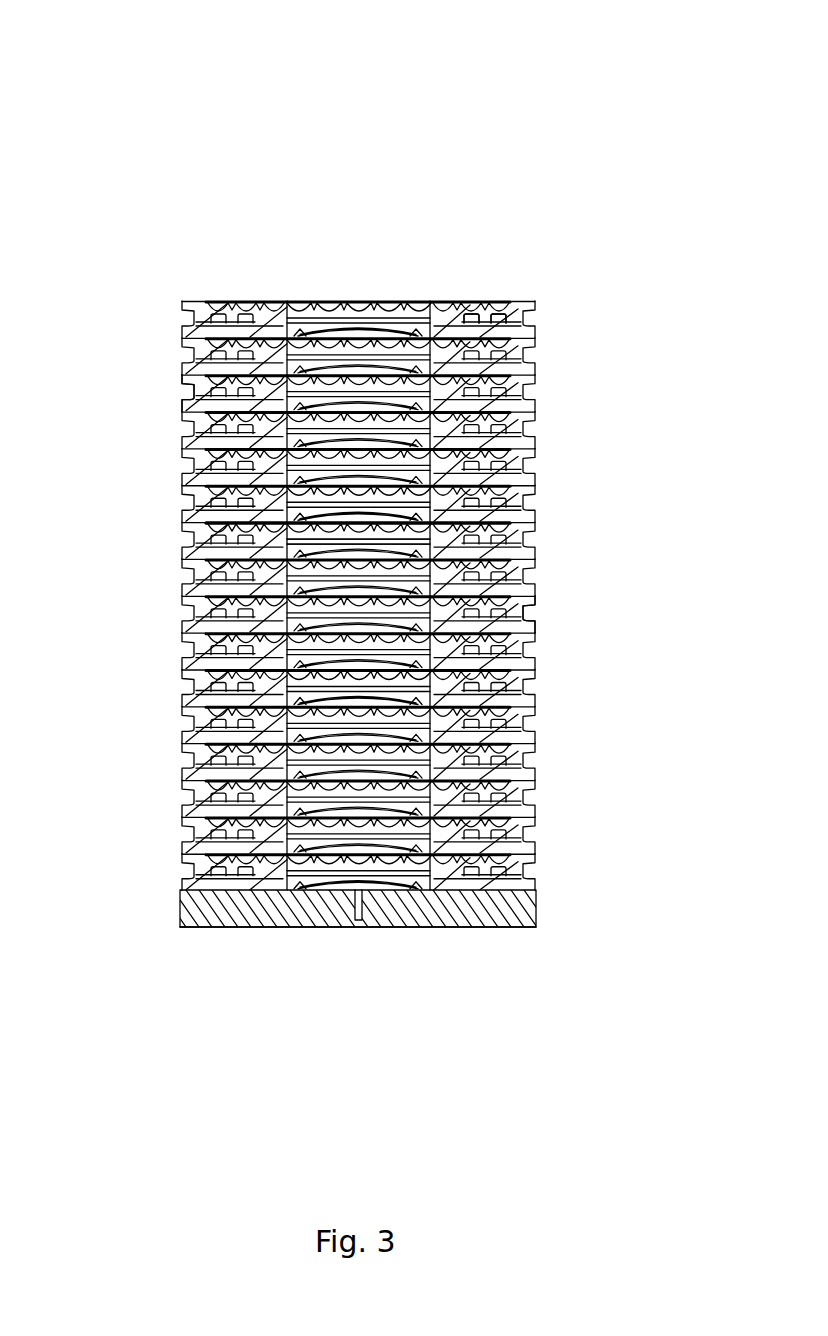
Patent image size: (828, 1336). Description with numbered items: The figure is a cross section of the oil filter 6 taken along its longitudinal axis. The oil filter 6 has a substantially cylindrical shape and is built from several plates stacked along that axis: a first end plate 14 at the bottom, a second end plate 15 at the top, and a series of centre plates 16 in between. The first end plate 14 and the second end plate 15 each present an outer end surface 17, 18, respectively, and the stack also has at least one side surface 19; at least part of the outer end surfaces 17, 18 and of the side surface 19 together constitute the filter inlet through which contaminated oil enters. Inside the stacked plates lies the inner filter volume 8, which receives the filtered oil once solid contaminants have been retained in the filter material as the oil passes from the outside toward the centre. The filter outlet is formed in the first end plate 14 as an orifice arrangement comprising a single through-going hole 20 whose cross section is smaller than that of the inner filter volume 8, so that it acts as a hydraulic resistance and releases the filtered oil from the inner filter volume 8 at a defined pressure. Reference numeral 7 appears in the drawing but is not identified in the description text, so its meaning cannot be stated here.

The oil filter 6 is at (185, 98).
The battery cell 7 is at (535, 515).
The inner filter volume 8 is at (363, 300).
The first end plate 14 is at (537, 905).
The second end plate 15 is at (535, 302).
The centre plate 16 is at (190, 372).
The outer end surface 17 is at (518, 928).
The outer end surface 18 is at (473, 300).
The side surface 19 is at (535, 602).
The through-going hole 20 is at (363, 927).